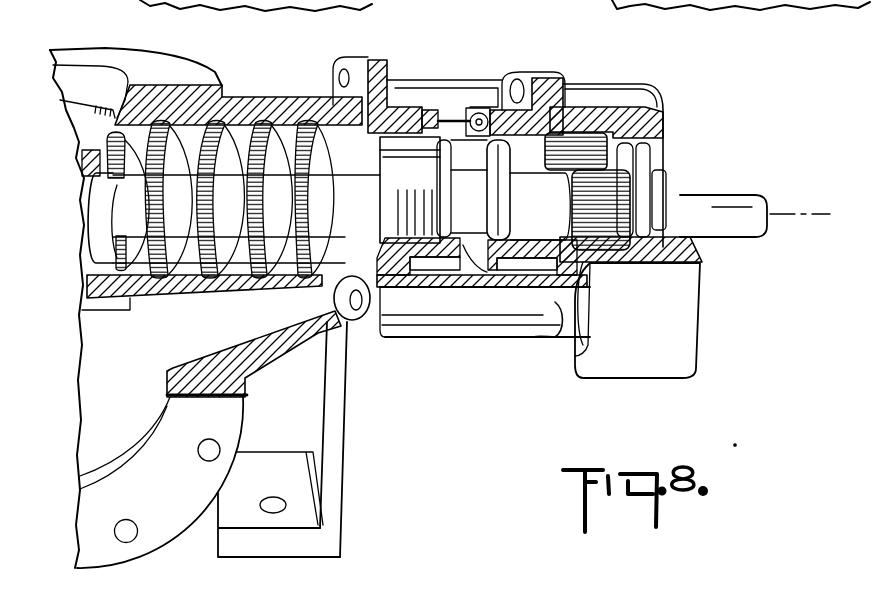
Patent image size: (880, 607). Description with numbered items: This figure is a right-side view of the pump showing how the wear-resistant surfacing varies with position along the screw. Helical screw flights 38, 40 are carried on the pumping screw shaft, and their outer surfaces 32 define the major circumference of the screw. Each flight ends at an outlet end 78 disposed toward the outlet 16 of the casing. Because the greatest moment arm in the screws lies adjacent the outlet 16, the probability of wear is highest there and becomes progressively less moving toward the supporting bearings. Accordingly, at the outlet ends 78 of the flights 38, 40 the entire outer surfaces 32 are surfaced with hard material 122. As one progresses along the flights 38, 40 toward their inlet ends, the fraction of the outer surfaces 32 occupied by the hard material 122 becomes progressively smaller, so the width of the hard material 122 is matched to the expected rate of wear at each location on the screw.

The outlet 16 is at (78, 92).
The hard material 122 is at (250, 130).
The helical screw flight 40 is at (211, 162).
The helical screw flight 38 is at (292, 168).
The outlet end 78 is at (87, 148).
The outer surface 32 is at (150, 252).